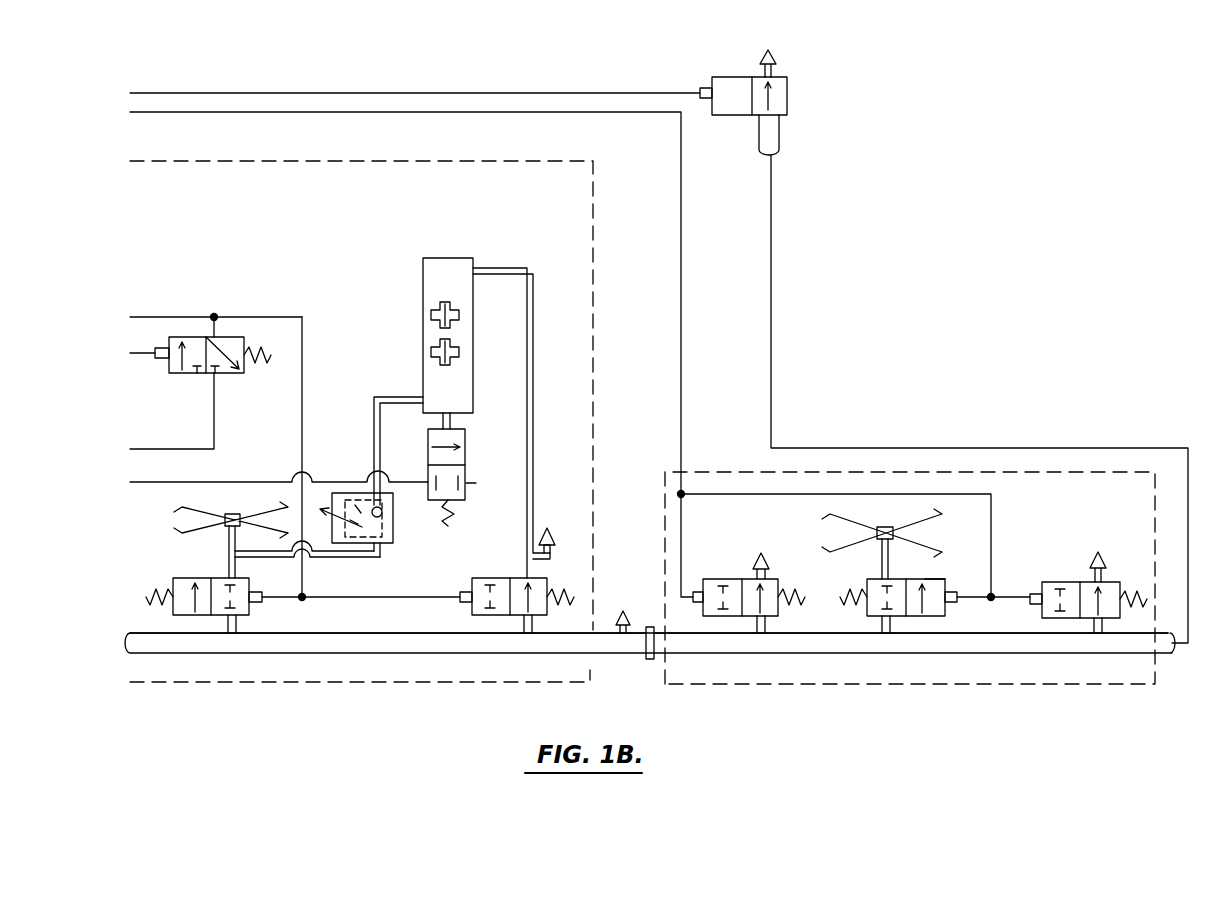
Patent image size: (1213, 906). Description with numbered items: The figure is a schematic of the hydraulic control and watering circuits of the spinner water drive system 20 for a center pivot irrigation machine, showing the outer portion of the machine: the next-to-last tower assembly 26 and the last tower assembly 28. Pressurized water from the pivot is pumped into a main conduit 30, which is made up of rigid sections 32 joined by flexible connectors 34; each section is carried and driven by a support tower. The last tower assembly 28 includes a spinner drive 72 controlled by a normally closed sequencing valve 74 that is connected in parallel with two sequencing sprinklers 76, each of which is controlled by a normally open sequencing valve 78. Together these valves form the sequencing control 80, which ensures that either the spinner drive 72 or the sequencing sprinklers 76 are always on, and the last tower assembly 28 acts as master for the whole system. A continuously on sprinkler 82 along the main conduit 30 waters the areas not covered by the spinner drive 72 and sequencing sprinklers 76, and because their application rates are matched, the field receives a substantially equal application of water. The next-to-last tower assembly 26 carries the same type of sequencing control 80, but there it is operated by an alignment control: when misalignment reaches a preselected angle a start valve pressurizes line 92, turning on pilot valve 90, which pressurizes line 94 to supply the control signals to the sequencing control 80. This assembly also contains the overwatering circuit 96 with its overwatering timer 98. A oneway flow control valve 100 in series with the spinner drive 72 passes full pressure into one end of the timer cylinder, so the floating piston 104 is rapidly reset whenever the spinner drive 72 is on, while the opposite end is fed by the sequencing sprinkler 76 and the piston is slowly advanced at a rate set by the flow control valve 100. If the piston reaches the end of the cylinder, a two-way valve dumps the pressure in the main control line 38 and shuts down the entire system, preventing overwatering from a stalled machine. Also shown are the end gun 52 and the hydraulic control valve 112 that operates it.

The spinner water drive system 20 is at (911, 272).
The next-to-last tower assembly 26 is at (606, 217).
The last tower assembly 28 is at (741, 455).
The main conduit 30 is at (416, 655).
The rigid section 32 is at (780, 147).
The flexible connector 34 is at (648, 660).
The main control line 38 is at (220, 480).
The end gun 52 is at (756, 58).
The spinner drive 72 is at (168, 526).
The normally closed sequencing valve 74 is at (944, 578).
The sequencing sprinkler 76 is at (548, 525).
The normally open sequencing valve 78 is at (482, 577).
The sequencing control 80 is at (186, 563).
The continuously on sprinkler 82 is at (623, 610).
The pilot valve 90 is at (235, 377).
The line 92 is at (143, 360).
The line 94 is at (214, 362).
The overwatering circuit 96 is at (454, 385).
The overwatering timer 98 is at (422, 286).
The oneway flow control valve 100 is at (394, 533).
The floating piston 104 is at (431, 344).
The hydraulic control valve 112 is at (790, 99).